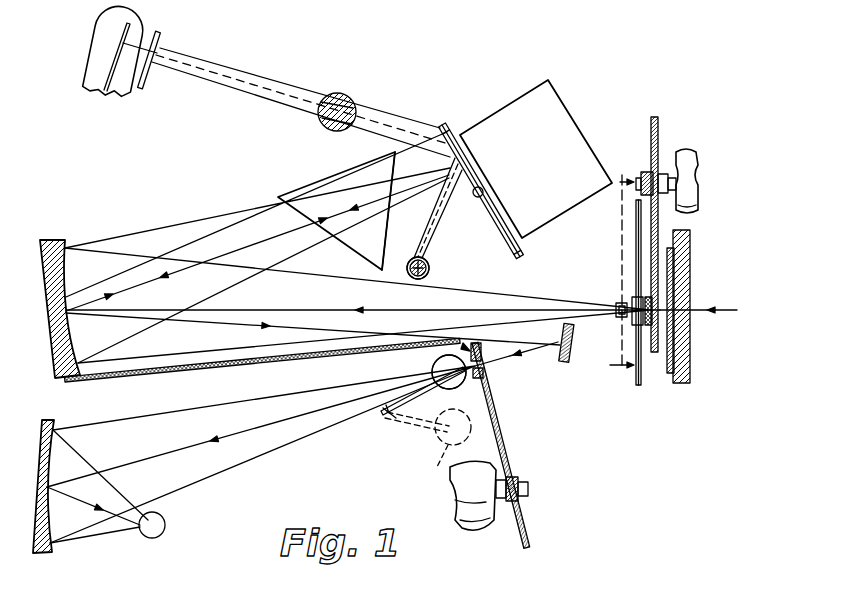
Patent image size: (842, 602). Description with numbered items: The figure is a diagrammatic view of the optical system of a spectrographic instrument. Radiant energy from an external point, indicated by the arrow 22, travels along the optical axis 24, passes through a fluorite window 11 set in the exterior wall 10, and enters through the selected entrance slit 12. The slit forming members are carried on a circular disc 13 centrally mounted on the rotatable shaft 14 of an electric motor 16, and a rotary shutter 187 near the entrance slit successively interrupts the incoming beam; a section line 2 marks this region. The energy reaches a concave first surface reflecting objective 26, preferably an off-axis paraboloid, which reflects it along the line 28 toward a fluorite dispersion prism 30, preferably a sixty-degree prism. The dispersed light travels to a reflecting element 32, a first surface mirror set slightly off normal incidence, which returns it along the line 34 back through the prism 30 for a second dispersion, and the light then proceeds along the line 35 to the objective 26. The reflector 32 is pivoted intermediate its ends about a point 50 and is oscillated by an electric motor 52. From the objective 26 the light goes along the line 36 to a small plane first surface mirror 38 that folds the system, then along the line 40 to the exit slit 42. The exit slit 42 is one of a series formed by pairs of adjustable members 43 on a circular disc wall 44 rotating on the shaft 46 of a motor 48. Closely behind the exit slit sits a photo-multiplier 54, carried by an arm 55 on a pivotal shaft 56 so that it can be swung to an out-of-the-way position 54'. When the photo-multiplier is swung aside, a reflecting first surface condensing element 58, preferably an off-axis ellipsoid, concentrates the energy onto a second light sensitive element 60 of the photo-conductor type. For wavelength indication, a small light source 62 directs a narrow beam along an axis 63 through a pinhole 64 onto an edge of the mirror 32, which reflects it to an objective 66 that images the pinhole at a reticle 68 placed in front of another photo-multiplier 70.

The section line 2- 2 is at (615, 265).
The exterior wall 10 is at (690, 250).
The window 11 is at (675, 290).
The entrance slit 12 is at (660, 308).
The circular disc 13 is at (651, 127).
The rotatable shaft 14 is at (641, 175).
The electric motor 16 is at (686, 150).
The arrow 22 is at (732, 313).
The optical axis 24 is at (478, 308).
The concave first surface reflecting objective 26 is at (66, 240).
The line 28 is at (146, 286).
The fluorite dispersion prism 30 is at (300, 200).
The reflecting element 32 is at (443, 125).
The line 34 is at (402, 197).
The line 35 is at (214, 263).
The line 36 is at (221, 339).
The small plane first surface mirror 38 is at (565, 362).
The line 40 is at (525, 353).
The exit slit 42 is at (485, 367).
The adjustable members 43 is at (448, 390).
The wall 44 is at (507, 428).
The shaft 46 is at (530, 488).
The motor 48 is at (457, 485).
The point 50 is at (478, 198).
The electric motor 52 is at (560, 104).
The photo-multiplier 54 is at (420, 372).
The out-of-the-way position 54' is at (428, 443).
The arm 55 is at (373, 425).
The pivotal shaft 56 is at (398, 423).
The reflecting first surface condensing element 58 is at (55, 420).
The second light sensitive element 60 is at (163, 513).
The light source 62 is at (412, 281).
The axis 63 is at (430, 238).
The pinhole 64 is at (429, 262).
The objective 66 is at (346, 101).
The reticle 68 is at (160, 48).
The photo-multiplier 70 is at (100, 67).
The rotary shutter 187 is at (636, 297).